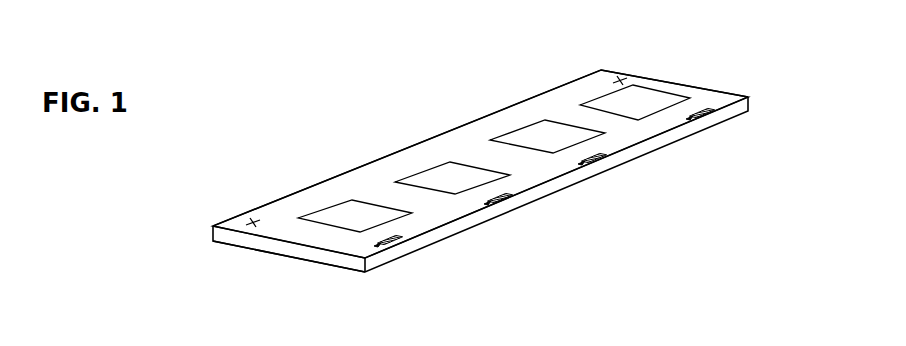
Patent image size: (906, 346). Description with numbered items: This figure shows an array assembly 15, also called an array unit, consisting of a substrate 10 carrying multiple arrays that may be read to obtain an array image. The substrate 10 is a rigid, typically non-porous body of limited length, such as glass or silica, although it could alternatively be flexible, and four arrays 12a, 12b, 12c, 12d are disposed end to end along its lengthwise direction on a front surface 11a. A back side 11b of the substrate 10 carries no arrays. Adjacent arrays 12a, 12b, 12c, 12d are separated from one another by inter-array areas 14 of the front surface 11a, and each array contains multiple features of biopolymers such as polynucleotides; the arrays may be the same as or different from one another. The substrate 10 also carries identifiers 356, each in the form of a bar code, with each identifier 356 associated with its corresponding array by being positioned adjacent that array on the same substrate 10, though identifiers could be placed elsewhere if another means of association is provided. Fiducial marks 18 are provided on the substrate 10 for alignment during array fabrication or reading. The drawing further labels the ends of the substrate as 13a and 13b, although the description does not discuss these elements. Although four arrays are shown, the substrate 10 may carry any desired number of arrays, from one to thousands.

The substrate 10 is at (378, 267).
The front surface 11a is at (280, 203).
The back side 11b is at (543, 203).
The array 12a is at (348, 210).
The array 12b is at (447, 175).
The array 12c is at (563, 132).
The array 12d is at (605, 102).
The first end edge 13a is at (668, 127).
The second end edge 13b is at (540, 107).
The inter-array area 14 is at (422, 202).
The array assembly 15 is at (271, 267).
The fiducial mark 18 is at (250, 222).
The identifier 356 is at (398, 250).